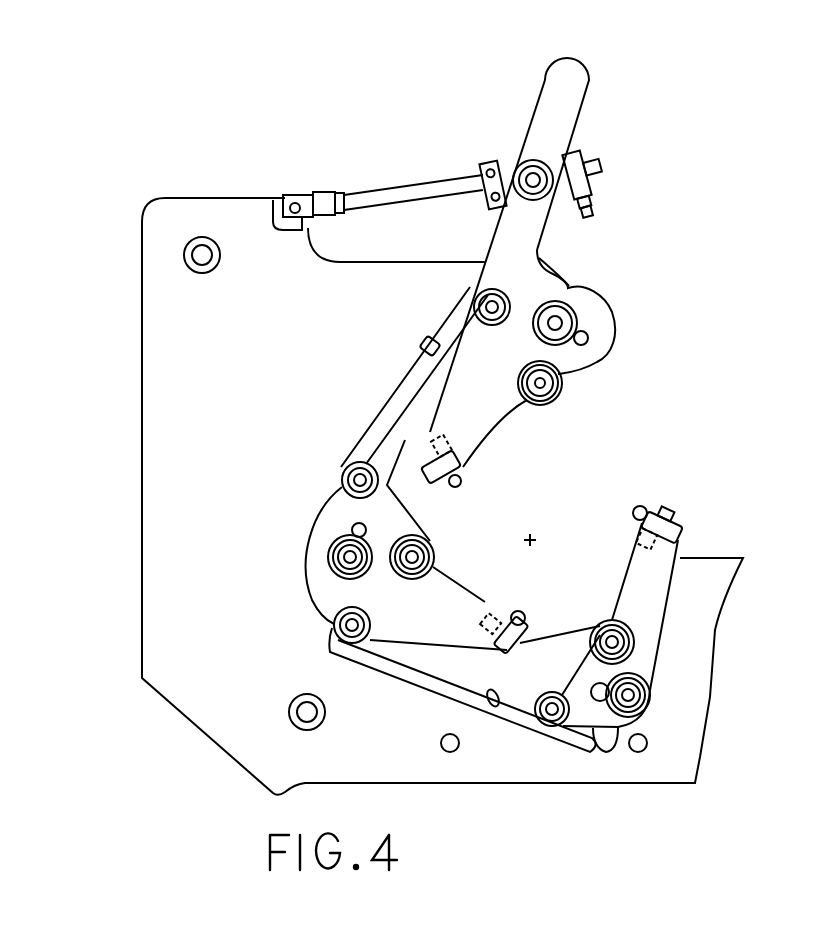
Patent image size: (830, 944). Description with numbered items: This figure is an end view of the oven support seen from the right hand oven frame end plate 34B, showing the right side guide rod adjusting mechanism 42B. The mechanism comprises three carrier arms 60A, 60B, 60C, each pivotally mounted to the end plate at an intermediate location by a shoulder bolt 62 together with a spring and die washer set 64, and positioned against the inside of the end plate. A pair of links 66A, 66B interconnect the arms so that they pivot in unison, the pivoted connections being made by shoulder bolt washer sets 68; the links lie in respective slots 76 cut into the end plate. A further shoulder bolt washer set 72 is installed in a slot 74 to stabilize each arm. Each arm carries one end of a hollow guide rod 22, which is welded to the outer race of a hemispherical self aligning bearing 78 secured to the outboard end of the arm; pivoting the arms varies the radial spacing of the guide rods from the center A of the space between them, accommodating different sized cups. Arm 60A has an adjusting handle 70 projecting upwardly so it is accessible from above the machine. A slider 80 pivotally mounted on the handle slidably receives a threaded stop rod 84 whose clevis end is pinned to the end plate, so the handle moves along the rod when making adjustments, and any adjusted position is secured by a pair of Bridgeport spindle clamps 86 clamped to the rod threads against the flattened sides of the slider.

The guide rod 22 is at (461, 478).
The oven frame end plate 34B is at (680, 763).
The right side guide rod adjusting mechanism 42B is at (630, 440).
The carrier arm 60A is at (584, 280).
The carrier arm 60B is at (472, 588).
The carrier arm 60C is at (677, 583).
The shoulder bolt 62 is at (545, 383).
The spring and die washer set 64 is at (565, 380).
The link 66A is at (405, 385).
The link 66B is at (440, 658).
The shoulder bolt washer set 68 is at (473, 298).
The adjusting handle 70 is at (545, 78).
The shoulder bolt washer set 72 is at (573, 311).
The slot 74 is at (587, 334).
The slot 76 is at (420, 347).
The hemispherical self aligning bearing 78 is at (438, 458).
The slider 80 is at (513, 143).
The threaded stop rod 84 is at (385, 190).
The Bridgeport spindle clamp 86 is at (295, 197).
The center A is at (531, 535).